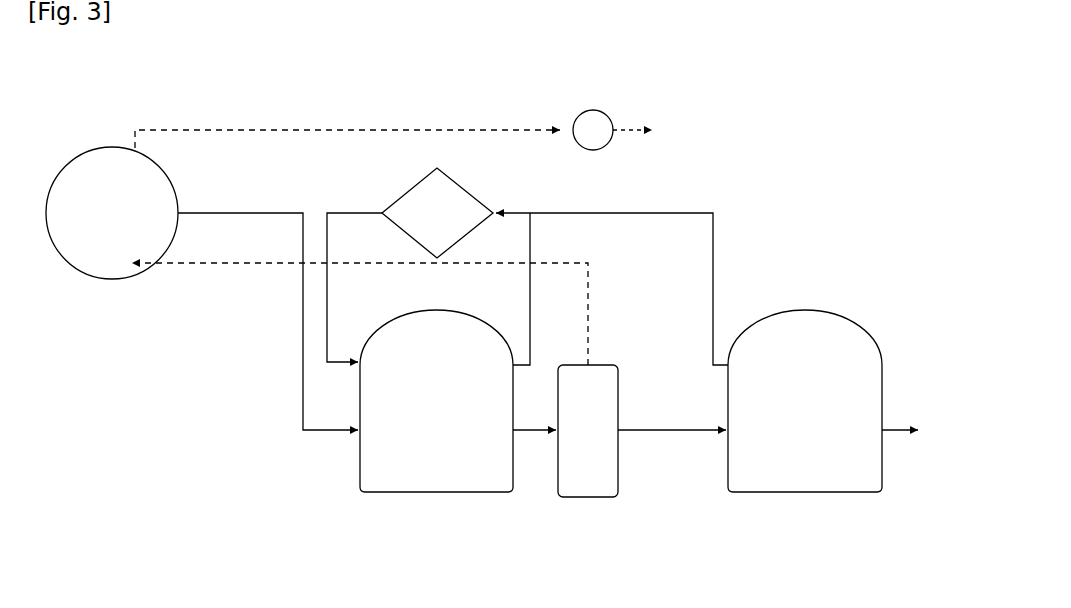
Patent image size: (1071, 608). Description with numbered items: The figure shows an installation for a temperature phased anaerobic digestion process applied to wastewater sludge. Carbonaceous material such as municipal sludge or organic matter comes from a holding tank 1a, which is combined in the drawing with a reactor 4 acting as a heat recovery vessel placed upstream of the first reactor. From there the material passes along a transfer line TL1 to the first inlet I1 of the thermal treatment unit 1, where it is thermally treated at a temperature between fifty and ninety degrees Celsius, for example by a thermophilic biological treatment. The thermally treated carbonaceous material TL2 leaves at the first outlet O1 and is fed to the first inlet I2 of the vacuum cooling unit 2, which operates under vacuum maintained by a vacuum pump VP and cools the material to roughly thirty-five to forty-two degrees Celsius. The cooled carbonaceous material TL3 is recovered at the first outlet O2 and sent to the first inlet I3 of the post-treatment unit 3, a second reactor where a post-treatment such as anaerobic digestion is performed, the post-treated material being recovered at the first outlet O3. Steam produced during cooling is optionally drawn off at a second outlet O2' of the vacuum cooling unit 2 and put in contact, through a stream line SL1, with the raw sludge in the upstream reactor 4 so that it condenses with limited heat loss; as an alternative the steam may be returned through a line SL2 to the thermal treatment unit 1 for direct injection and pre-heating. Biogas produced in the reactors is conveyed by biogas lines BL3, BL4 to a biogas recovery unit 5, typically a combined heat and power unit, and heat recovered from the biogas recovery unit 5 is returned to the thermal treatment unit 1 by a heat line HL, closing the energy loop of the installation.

The holding tank 1a is at (97, 254).
The reactor 4 is at (112, 242).
The thermal treatment unit 1 is at (410, 474).
The vacuum cooling unit 2 is at (597, 474).
The post-treatment unit 3 is at (808, 336).
The biogas recovery unit 5 is at (466, 198).
The vacuum pump VP is at (612, 123).
The stream line SL1 is at (213, 267).
The steam return line SL2 is at (268, 126).
The transfer line TL1 is at (236, 209).
The thermally treated carbonaceous material TL2 is at (531, 438).
The cooled carbonaceous material TL3 is at (666, 436).
The heat line HL is at (330, 245).
The biogas line BL3 is at (692, 209).
The biogas line BL4 is at (531, 249).
The first inlet I1 is at (358, 438).
The first inlet I2 is at (555, 426).
The first inlet I3 is at (725, 438).
The first outlet O1 is at (520, 438).
The first outlet O2 is at (640, 392).
The second outlet O2' is at (611, 328).
The first outlet O3 is at (886, 426).